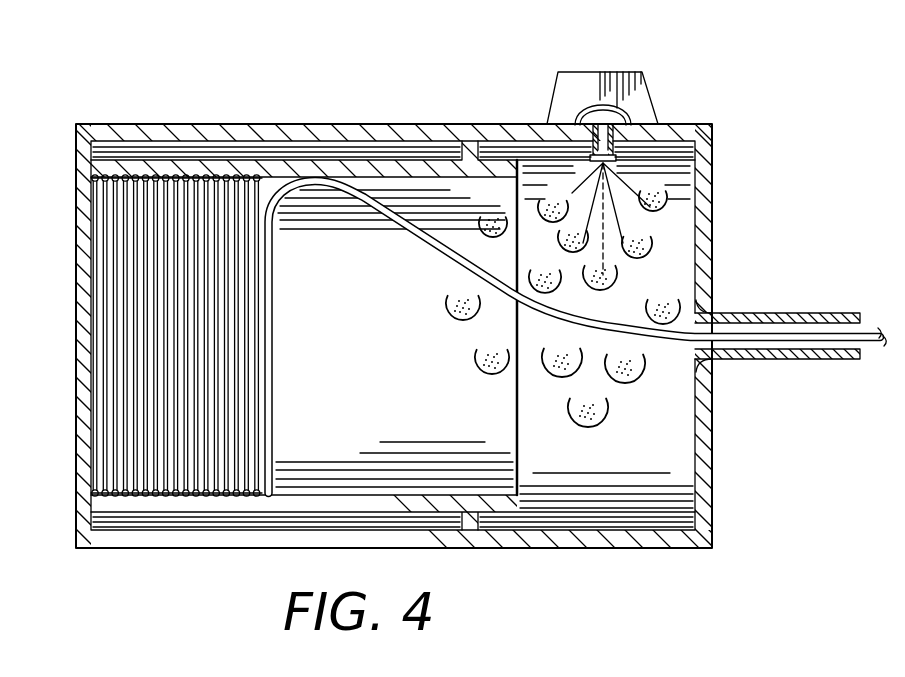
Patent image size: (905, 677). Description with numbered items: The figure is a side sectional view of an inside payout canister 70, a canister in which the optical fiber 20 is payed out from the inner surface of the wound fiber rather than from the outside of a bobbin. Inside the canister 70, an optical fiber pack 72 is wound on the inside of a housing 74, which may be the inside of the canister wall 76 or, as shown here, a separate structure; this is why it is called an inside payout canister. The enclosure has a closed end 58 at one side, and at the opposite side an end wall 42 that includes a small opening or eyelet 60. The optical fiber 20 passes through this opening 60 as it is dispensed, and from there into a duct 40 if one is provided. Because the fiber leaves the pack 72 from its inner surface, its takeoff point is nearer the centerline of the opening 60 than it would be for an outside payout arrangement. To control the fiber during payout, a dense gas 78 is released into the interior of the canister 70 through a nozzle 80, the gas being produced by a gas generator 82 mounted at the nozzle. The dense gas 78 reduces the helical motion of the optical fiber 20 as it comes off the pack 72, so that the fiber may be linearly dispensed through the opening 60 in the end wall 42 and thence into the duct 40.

The inside payout canister 70 is at (119, 117).
The end wall 42 is at (712, 448).
The closed end 58 is at (76, 311).
The canister wall 76 is at (368, 124).
The housing 74 is at (313, 505).
The optical fiber pack 72 is at (100, 378).
The nozzle 80 is at (662, 162).
The gas generator 82 is at (655, 85).
The dense gas 78 is at (645, 245).
The duct 40 is at (832, 313).
The opening 60 is at (705, 315).
The optical fiber 20 is at (787, 343).